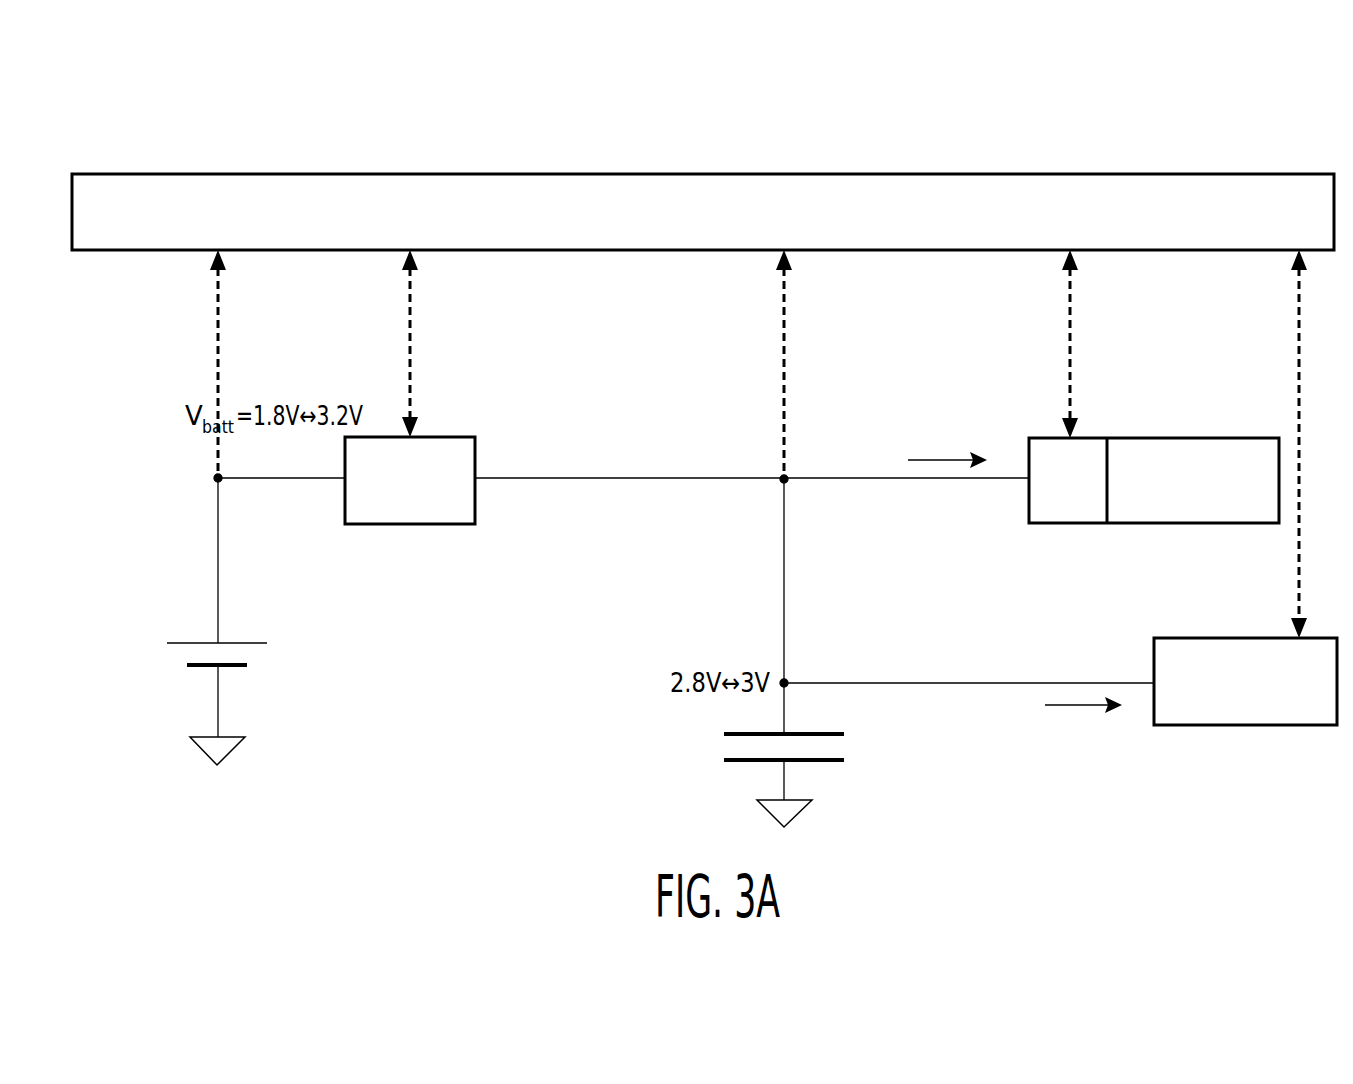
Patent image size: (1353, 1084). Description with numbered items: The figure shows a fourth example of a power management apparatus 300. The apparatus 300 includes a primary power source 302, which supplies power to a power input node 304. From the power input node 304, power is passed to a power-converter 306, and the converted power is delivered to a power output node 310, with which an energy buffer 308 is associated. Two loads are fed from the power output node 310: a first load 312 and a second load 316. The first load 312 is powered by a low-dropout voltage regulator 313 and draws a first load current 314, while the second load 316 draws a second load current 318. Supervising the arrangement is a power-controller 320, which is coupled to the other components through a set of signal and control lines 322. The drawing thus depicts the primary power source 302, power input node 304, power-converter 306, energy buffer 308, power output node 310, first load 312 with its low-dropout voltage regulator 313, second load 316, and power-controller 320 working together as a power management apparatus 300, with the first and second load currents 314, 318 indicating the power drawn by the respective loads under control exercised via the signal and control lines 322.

The power management apparatus 300 is at (117, 158).
The primary power source 302 is at (122, 767).
The power input node 304 is at (215, 484).
The power-converter 306 is at (503, 370).
The energy buffer 308 is at (722, 748).
The power output node 310 is at (788, 483).
The first load 312 is at (1177, 400).
The low-dropout voltage regulator 313 is at (1060, 524).
The first load current 314 is at (866, 425).
The second load 316 is at (1235, 605).
The second load current 318 is at (1058, 745).
The power-controller 320 is at (553, 174).
The signal and control lines 322 is at (216, 300).